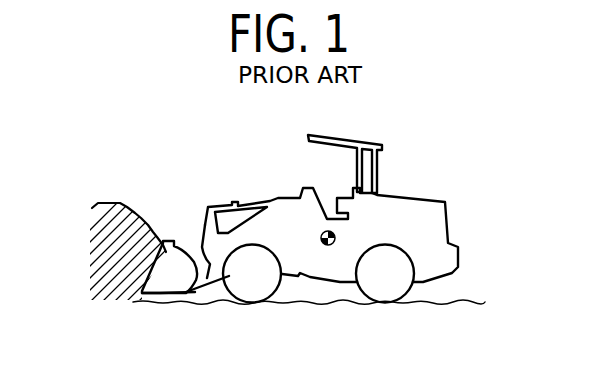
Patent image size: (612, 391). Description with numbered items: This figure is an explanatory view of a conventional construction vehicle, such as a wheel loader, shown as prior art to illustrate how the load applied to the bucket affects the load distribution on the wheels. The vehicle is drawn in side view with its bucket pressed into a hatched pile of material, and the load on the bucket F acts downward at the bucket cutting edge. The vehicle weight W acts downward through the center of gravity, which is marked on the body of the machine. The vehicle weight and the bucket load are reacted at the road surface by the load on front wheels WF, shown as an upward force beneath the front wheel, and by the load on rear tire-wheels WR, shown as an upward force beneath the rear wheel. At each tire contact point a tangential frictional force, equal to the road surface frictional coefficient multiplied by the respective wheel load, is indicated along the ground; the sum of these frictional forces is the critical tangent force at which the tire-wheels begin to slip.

The load on the bucket F is at (140, 290).
The vehicle weight W is at (328, 222).
The load on front wheels WF is at (248, 306).
The load on rear tire-wheels WR is at (388, 308).